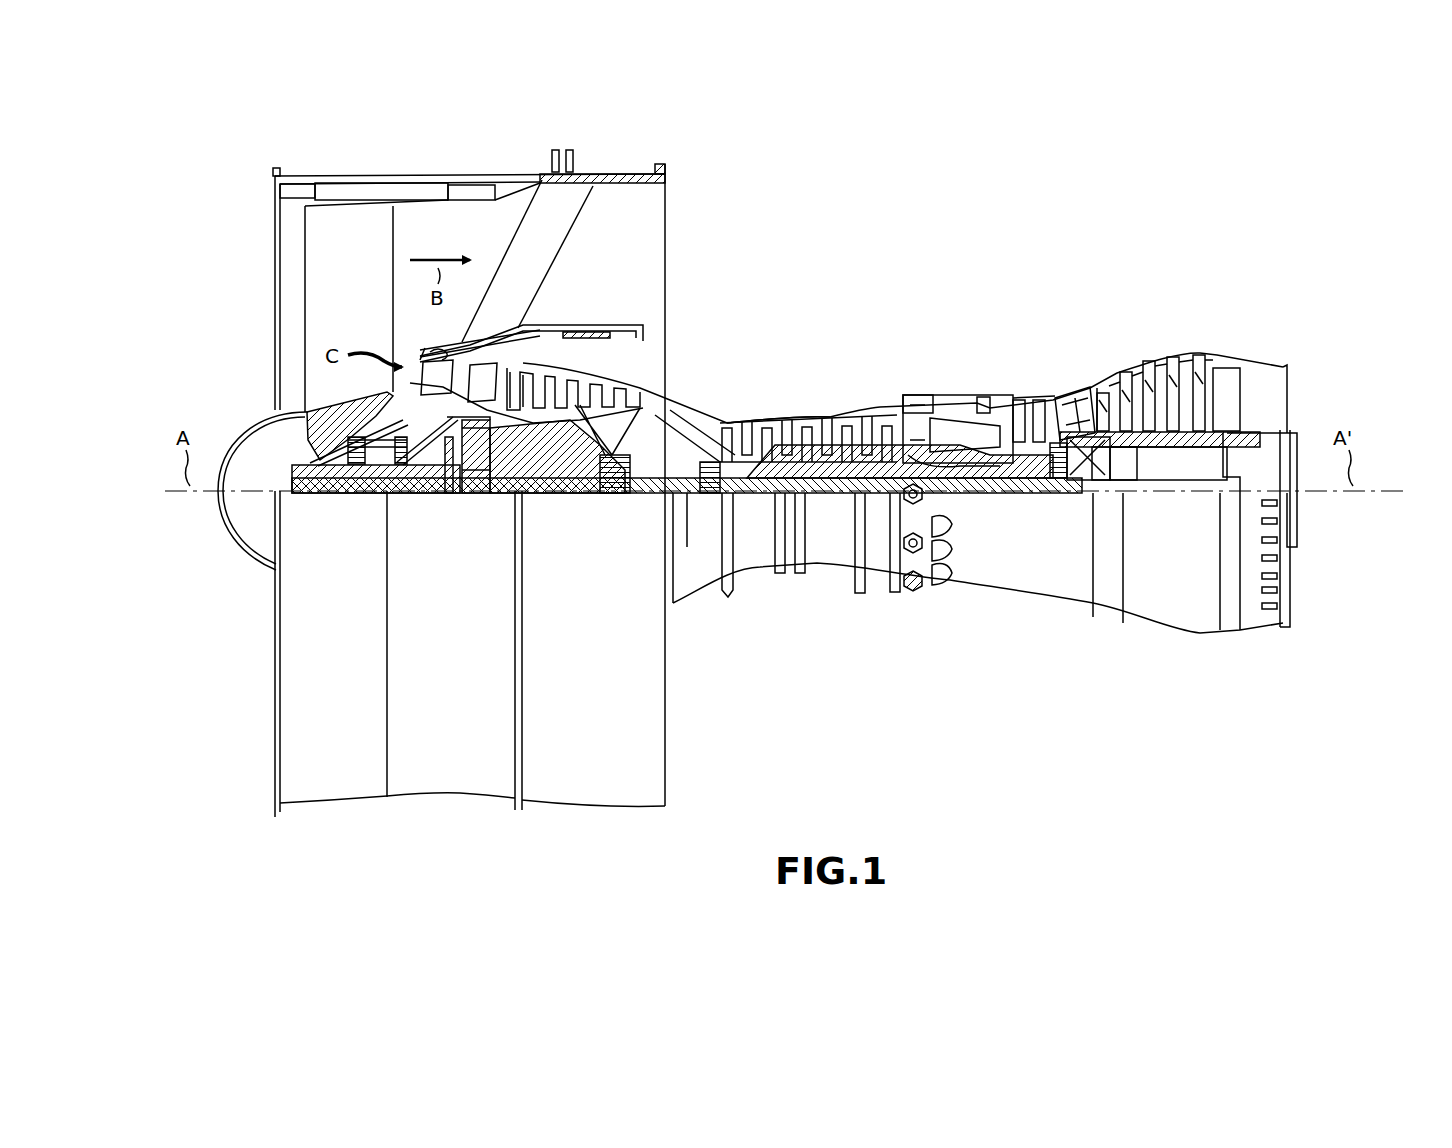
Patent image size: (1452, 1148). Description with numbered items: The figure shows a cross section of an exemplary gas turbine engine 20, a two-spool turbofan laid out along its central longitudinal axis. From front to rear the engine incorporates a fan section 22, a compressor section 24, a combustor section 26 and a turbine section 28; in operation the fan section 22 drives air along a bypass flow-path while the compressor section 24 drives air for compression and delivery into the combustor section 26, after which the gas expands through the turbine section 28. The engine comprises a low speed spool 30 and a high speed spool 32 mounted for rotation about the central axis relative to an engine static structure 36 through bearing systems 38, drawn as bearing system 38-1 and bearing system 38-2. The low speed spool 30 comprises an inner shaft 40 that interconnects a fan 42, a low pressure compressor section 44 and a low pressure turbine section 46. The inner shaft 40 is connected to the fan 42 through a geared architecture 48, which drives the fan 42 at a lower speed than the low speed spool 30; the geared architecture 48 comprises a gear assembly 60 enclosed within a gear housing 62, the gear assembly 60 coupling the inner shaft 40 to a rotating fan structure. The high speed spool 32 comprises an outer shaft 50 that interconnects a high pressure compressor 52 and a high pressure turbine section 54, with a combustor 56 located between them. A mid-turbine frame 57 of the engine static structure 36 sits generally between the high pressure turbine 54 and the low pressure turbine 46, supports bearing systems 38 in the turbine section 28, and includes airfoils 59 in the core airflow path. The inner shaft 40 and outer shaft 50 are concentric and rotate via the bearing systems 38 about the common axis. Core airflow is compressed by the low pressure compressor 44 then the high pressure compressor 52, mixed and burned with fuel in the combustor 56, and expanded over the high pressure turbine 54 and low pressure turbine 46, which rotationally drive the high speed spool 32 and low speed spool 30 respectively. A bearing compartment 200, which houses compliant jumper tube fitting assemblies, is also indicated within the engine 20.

The gas turbine engine 20 is at (1014, 220).
The fan section 22 is at (515, 156).
The compressor section 24 is at (522, 291).
The combustor section 26 is at (1010, 291).
The turbine section 28 is at (1228, 291).
The low speed spool 30 is at (838, 518).
The high speed spool 32 is at (874, 458).
The engine static structure 36 is at (266, 808).
The bearing system 38 is at (1067, 492).
The bearing system 38-1 is at (351, 466).
The bearing system 38-2 is at (618, 471).
The inner shaft 40 is at (689, 495).
The fan 42 is at (358, 304).
The low pressure compressor section 44 is at (626, 384).
The low pressure turbine section 46 is at (1164, 366).
The geared architecture 48 is at (486, 508).
The outer shaft 50 is at (960, 478).
The high pressure compressor 52 is at (818, 420).
The high pressure turbine section 54 is at (1003, 402).
The combustor 56 is at (956, 440).
The mid-turbine frame 57 is at (1068, 406).
The airfoils 59 is at (1077, 432).
The gear assembly 60 is at (488, 461).
The gear housing 62 is at (483, 427).
The bearing compartment 200 is at (721, 390).